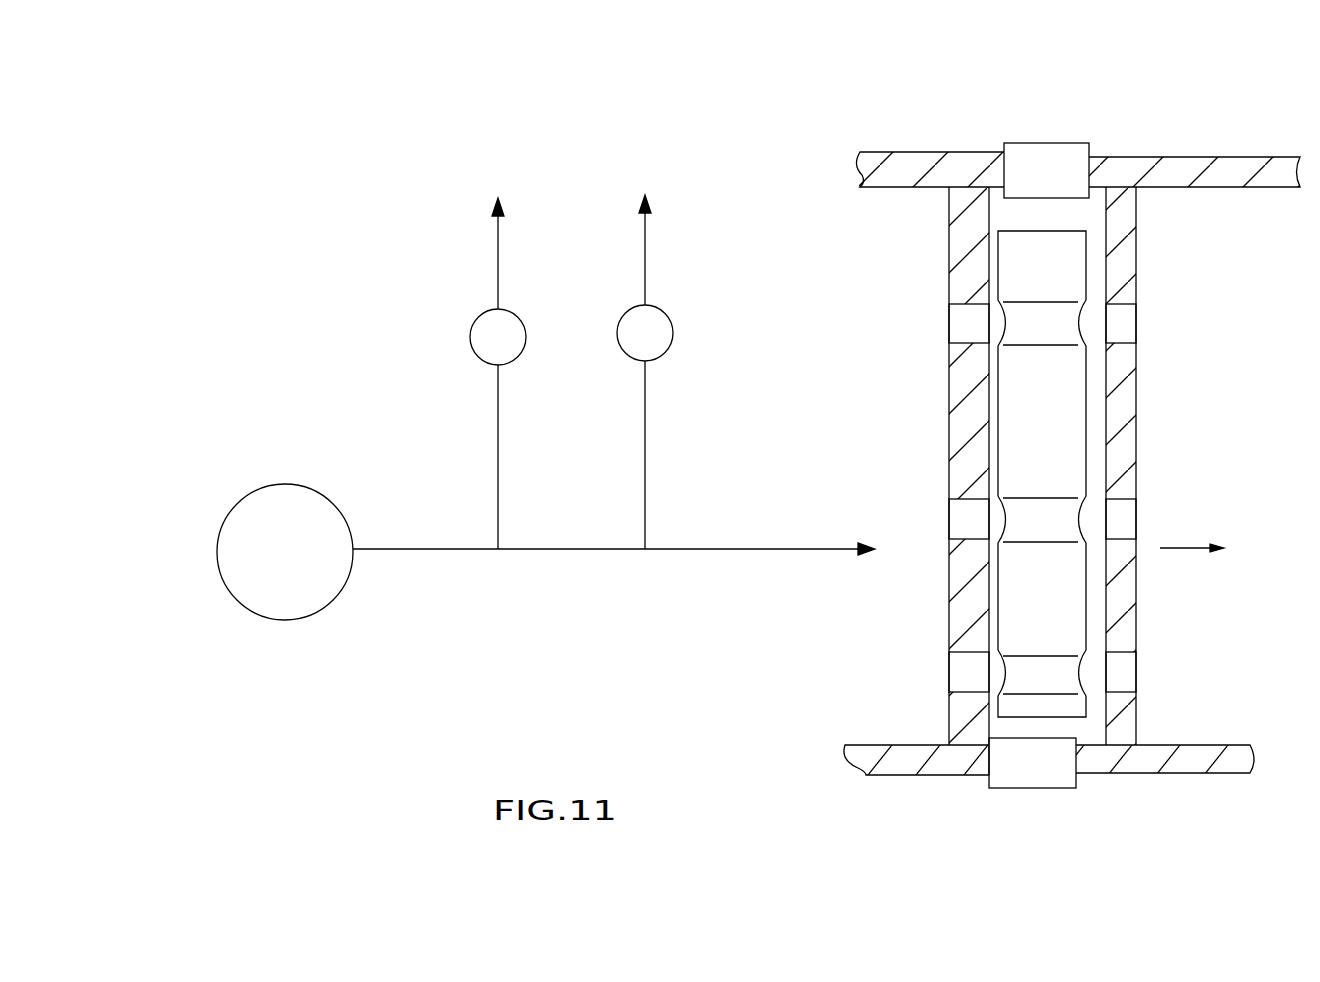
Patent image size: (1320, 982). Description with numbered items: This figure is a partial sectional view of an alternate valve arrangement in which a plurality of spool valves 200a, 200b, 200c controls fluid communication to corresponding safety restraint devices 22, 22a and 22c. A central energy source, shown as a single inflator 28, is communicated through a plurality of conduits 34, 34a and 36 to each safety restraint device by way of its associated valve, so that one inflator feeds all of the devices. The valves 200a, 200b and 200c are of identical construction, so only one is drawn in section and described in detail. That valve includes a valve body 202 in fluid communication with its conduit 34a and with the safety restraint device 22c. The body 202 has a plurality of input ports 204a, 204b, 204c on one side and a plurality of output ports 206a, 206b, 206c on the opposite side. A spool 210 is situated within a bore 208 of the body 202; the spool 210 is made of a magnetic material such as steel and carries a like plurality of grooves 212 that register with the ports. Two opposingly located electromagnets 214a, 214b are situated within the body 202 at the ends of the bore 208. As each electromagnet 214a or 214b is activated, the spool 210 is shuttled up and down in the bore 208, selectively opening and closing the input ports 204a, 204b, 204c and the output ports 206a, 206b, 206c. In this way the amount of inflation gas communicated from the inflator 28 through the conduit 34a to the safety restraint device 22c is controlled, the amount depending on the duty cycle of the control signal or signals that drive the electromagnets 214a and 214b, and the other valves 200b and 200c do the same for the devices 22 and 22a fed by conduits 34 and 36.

The safety restraint device 22 is at (502, 233).
The safety restraint device 22a is at (648, 229).
The safety restraint device 22c is at (1226, 550).
The inflator 28 is at (285, 572).
The conduit 34 is at (498, 482).
The conduit 34a is at (672, 550).
The conduit 36 is at (645, 477).
The spool valve 200a is at (1033, 143).
The spool valve 200b is at (477, 357).
The spool valve 200c is at (670, 338).
The valve body 202 is at (873, 152).
The input port 204a is at (950, 334).
The input port 204b is at (950, 514).
The input port 204c is at (946, 677).
The output port 206a is at (1137, 318).
The output port 206b is at (1137, 522).
The output port 206c is at (1135, 670).
The bore 208 is at (1107, 288).
The spool 210 is at (1043, 583).
The groove 212 is at (1007, 516).
The electromagnet 214a is at (1053, 142).
The electromagnet 214b is at (1032, 788).